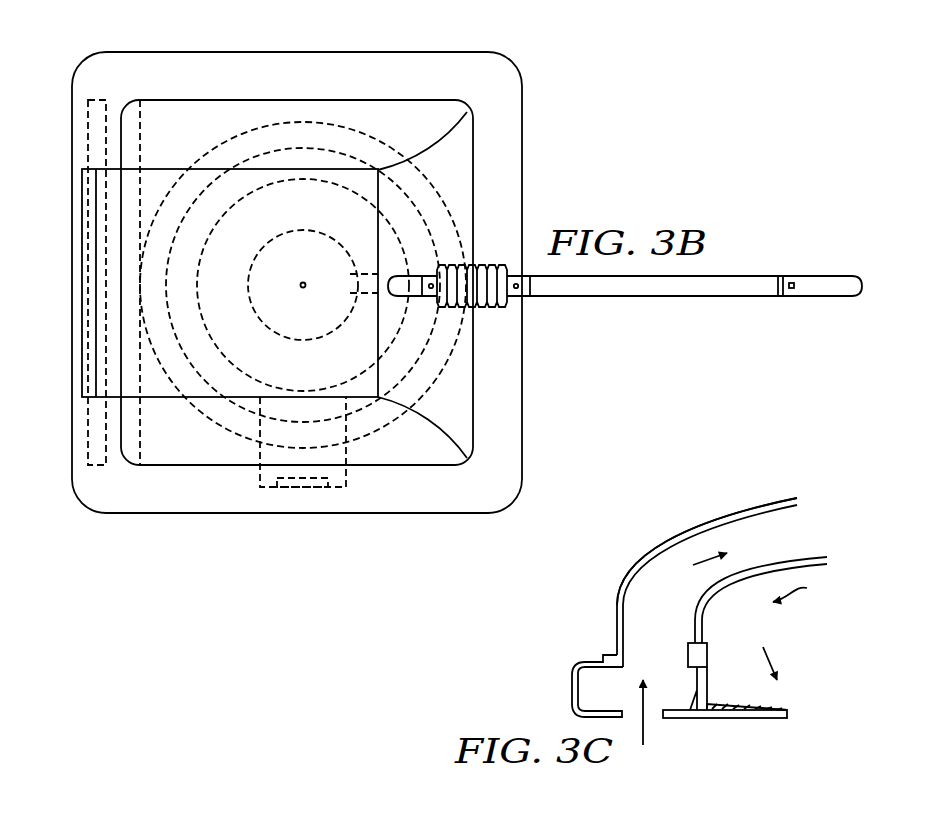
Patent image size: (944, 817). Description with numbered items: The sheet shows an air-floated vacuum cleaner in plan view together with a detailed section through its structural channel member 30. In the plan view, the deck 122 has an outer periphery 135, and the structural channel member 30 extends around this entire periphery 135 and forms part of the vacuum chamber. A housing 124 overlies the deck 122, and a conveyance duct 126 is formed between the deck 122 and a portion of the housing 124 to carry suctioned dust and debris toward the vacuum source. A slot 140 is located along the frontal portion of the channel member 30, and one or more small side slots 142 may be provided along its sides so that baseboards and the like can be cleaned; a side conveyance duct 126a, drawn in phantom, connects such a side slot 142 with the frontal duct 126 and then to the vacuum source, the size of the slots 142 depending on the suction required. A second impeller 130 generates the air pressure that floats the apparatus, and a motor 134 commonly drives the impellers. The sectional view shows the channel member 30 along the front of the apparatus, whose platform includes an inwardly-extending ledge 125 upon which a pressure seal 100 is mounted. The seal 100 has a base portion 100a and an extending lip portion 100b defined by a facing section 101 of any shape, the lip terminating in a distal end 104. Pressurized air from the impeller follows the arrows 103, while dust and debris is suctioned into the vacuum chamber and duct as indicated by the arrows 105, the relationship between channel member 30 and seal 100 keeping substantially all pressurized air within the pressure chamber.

In FIG. 3B, the structural channel member 30 is at (290, 60).
In FIG. 3C, the structural channel member 30 is at (587, 647).
In FIG. 3B, the pressure seal 100 is at (162, 266).
In FIG. 3C, the pressure seal 100 is at (763, 728).
In FIG. 3C, the base portion 100a is at (713, 705).
In FIG. 3C, the lip portion 100b is at (780, 708).
In FIG. 3C, the facing section 101 is at (763, 707).
In FIG. 3C, the arrows 103 is at (811, 615).
In FIG. 3B, the distal end 104 is at (205, 195).
In FIG. 3C, the distal end 104 is at (790, 717).
In FIG. 3C, the arrows 105 is at (700, 550).
In FIG. 3C, the deck 122 is at (735, 590).
In FIG. 3C, the housing 124 is at (740, 510).
In FIG. 3B, the ledge 125 is at (132, 127).
In FIG. 3C, the ledge 125 is at (717, 719).
In FIG. 3B, the conveyance duct 126 is at (157, 382).
In FIG. 3C, the conveyance duct 126 is at (680, 616).
In FIG. 3B, the side conveyance duct 126a is at (350, 452).
In FIG. 3B, the second impeller 130 is at (210, 327).
In FIG. 3B, the motor 134 is at (302, 228).
In FIG. 3B, the outer periphery 135 is at (362, 100).
In FIG. 3B, the slot 140 is at (100, 102).
In FIG. 3B, the side slots 142 is at (290, 488).